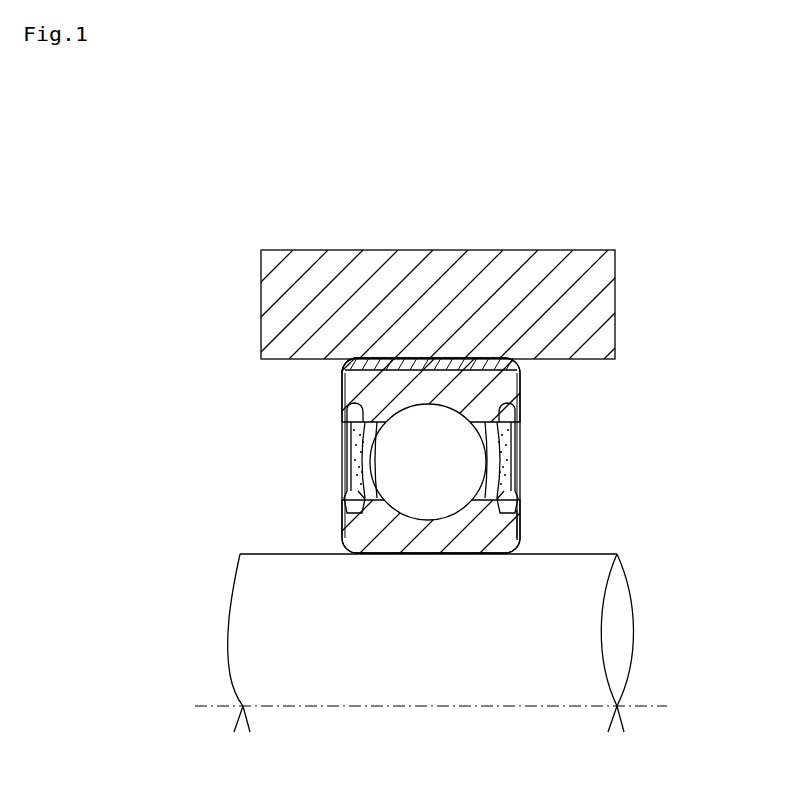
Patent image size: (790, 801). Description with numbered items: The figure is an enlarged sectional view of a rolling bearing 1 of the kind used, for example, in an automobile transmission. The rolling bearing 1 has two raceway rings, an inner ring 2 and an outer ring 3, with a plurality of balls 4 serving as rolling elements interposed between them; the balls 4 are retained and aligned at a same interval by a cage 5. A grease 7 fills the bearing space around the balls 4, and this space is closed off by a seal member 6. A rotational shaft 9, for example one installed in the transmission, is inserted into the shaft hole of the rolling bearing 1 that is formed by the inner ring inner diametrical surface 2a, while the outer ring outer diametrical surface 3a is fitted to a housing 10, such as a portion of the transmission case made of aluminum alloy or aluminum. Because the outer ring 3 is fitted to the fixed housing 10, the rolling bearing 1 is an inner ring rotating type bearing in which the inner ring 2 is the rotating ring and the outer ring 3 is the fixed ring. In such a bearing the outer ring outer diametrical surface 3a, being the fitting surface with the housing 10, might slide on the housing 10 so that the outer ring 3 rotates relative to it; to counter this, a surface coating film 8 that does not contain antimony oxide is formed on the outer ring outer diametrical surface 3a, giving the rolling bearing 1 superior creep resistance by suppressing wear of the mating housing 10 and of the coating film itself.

The rolling bearing 1 is at (633, 433).
The inner ring 2 is at (343, 535).
The inner ring inner diametrical surface 2a is at (518, 535).
The outer ring 3 is at (342, 392).
The outer ring outer diametrical surface 3a is at (500, 387).
The balls 4 is at (460, 457).
The cage 5 is at (343, 458).
The seal member 6 is at (513, 495).
The grease 7 is at (500, 470).
The surface coating film 8 is at (345, 364).
The rotational shaft 9 is at (255, 612).
The housing 10 is at (275, 288).